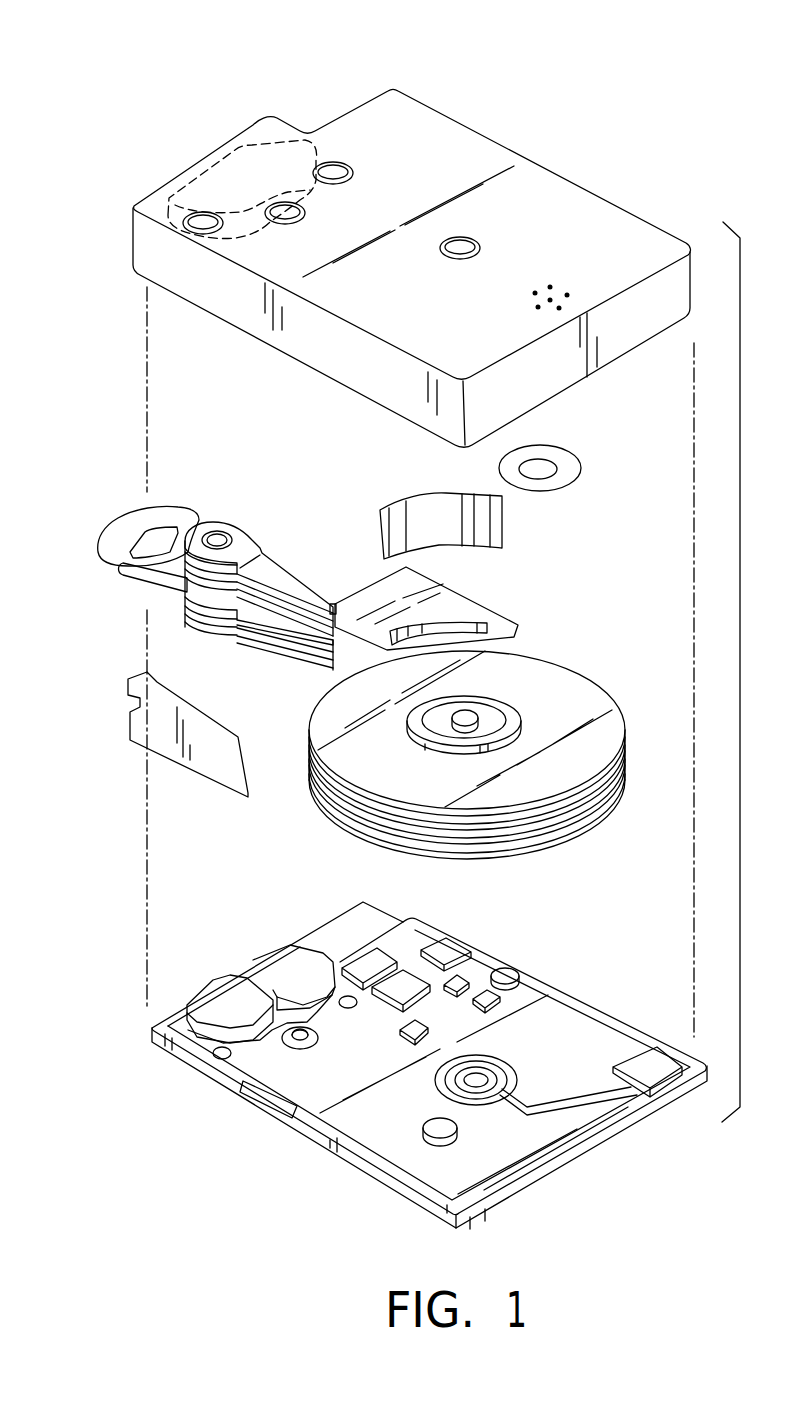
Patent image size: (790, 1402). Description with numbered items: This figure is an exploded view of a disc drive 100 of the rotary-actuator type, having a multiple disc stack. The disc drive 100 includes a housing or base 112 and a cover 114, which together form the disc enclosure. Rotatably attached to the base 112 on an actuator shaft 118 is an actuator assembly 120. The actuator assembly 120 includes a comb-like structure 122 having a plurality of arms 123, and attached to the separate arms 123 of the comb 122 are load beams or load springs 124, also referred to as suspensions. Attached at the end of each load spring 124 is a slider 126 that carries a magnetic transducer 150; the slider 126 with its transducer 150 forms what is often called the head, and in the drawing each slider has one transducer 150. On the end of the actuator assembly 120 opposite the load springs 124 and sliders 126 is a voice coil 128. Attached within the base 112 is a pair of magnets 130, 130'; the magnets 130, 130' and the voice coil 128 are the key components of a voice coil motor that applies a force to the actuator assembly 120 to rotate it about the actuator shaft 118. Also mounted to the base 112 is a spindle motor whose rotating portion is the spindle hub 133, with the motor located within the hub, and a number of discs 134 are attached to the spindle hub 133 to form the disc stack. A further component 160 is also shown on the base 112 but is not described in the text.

The disc drive 100 is at (553, 110).
The base 112 is at (599, 1035).
The cover 114 is at (577, 210).
The actuator shaft 118 is at (218, 537).
The actuator assembly 120 is at (167, 587).
The comb-like structure 122 is at (240, 640).
The arms 123 is at (272, 550).
The load springs 124 is at (287, 580).
The slider 126 is at (332, 605).
The voice coil 128 is at (123, 537).
The magnets 130 is at (233, 166).
The magnet 130' is at (259, 980).
The spindle hub 133 is at (473, 710).
The discs 134 is at (593, 697).
The magnetic transducer 150 is at (347, 607).
The printed circuit board 160 is at (173, 1072).